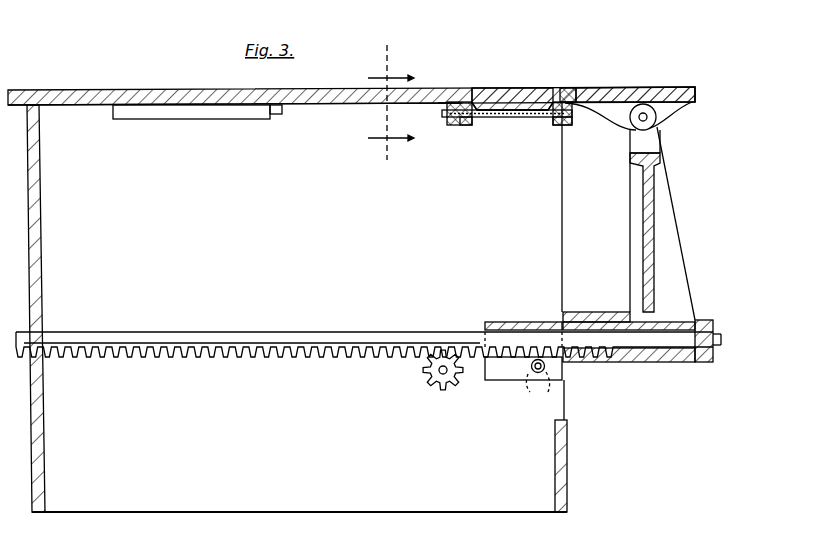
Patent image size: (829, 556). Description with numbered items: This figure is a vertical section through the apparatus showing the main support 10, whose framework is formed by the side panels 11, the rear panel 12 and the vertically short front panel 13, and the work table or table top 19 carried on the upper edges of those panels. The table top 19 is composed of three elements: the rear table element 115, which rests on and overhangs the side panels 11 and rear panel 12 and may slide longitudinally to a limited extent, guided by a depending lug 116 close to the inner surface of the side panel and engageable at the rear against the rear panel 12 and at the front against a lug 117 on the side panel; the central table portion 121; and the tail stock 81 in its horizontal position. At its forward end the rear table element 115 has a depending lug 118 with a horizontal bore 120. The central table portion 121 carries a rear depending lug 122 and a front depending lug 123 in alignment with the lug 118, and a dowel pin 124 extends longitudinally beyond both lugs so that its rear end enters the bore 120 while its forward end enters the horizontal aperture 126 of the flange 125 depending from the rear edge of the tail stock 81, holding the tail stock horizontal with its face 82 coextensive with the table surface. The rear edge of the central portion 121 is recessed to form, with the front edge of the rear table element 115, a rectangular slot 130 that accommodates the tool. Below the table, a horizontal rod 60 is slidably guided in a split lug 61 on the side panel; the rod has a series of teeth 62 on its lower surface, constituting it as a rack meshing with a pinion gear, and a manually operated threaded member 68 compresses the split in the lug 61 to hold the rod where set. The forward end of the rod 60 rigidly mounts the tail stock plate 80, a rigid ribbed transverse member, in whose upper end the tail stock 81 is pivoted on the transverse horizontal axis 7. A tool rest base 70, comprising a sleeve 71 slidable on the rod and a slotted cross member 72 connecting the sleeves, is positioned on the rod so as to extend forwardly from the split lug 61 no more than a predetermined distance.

The transverse horizontal axis 7 is at (650, 118).
The main support 10 is at (41, 251).
The side panels 11 is at (333, 140).
The rear panel 12 is at (36, 217).
The front panel 13 is at (567, 476).
The table top 19 is at (167, 90).
The horizontal rod 60 is at (340, 332).
The split lug 61 is at (520, 322).
The teeth 62 is at (370, 358).
The threaded member 68 is at (532, 371).
The tool rest base 70 is at (596, 286).
The sleeve 71 is at (607, 300).
The cross member 72 is at (583, 312).
The tail stock plate 80 is at (657, 250).
The tail stock 81 is at (668, 88).
The face 82 is at (612, 88).
The rear table element 115 is at (72, 82).
The depending lug 116 is at (180, 119).
The lug 117 is at (281, 116).
The depending lug 118 is at (455, 125).
The horizontal bore 120 is at (447, 104).
The central table portion 121 is at (515, 90).
The rear depending lug 122 is at (470, 124).
The front depending lug 123 is at (556, 125).
The dowel pin 124 is at (520, 110).
The flange 125 is at (566, 125).
The horizontal aperture 126 is at (573, 104).
The rectangular slot 130 is at (472, 88).